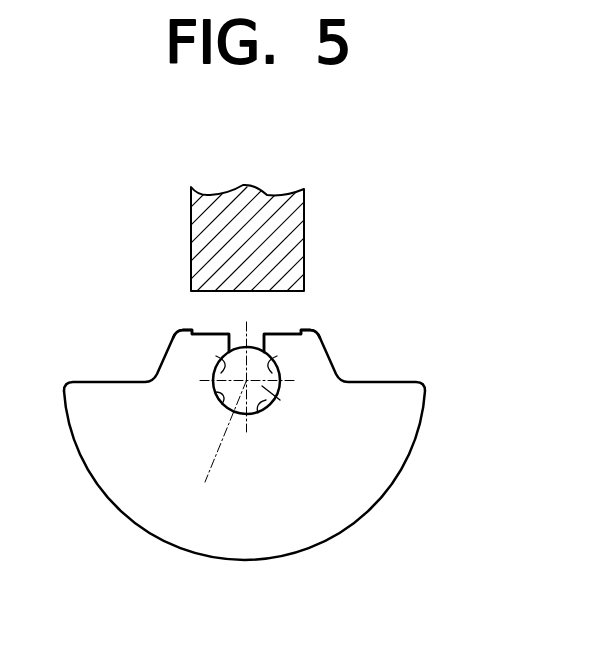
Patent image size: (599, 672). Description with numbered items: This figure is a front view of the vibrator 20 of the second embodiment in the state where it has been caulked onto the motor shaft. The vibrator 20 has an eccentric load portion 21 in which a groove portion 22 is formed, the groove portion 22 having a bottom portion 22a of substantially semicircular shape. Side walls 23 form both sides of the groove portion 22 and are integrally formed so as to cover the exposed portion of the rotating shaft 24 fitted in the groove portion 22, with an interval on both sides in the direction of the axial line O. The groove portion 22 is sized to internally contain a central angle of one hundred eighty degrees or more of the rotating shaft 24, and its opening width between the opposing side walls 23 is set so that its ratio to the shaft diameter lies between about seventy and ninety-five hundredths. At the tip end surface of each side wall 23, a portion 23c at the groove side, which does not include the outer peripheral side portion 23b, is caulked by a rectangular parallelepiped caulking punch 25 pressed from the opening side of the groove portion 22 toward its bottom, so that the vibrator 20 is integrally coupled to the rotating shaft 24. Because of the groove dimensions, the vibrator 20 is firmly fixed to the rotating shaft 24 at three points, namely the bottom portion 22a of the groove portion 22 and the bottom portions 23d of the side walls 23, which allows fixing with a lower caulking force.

The vibrator 20 is at (288, 434).
The eccentric load portion 21 is at (373, 488).
The groove portion 22 is at (225, 404).
The bottom portion 22a is at (264, 414).
The side walls 23 is at (193, 362).
The outer peripheral side portion 23b is at (180, 330).
The caulked portion 23c is at (198, 332).
The bottom portions of the side walls 23d is at (214, 360).
The rotating shaft 24 is at (280, 400).
The caulking punch 25 is at (297, 207).
The axial line O is at (219, 450).